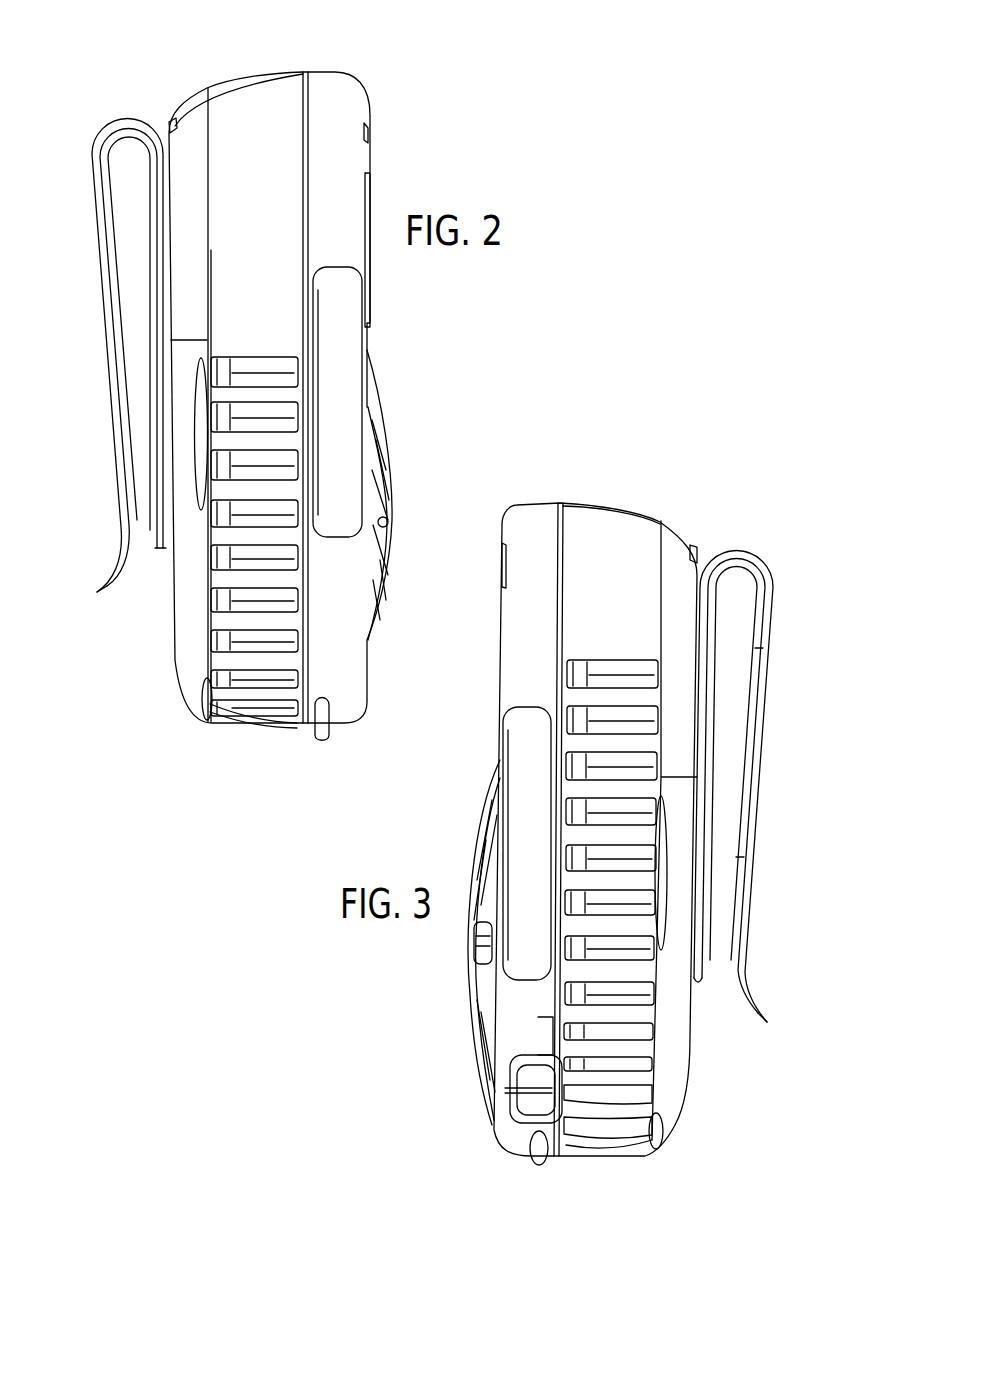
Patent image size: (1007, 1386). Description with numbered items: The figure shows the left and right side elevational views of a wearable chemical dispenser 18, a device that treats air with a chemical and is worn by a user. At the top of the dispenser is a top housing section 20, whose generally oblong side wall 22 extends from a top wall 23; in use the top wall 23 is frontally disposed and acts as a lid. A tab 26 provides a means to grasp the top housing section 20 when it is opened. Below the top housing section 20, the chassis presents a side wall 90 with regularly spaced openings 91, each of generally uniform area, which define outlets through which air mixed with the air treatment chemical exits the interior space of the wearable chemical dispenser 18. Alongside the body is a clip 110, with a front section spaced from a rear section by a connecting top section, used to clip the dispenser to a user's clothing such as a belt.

In FIG. 2, the wearable chemical dispenser 18 is at (147, 736).
In FIG. 3, the wearable chemical dispenser 18 is at (721, 1128).
In FIG. 2, the top housing section 20 is at (357, 120).
In FIG. 3, the top housing section 20 is at (528, 496).
In FIG. 2, the side wall 22 is at (352, 196).
In FIG. 3, the side wall 22 is at (546, 626).
In FIG. 2, the top wall 23 is at (367, 160).
In FIG. 3, the top wall 23 is at (500, 592).
In FIG. 3, the tab 26 is at (541, 1162).
In FIG. 2, the side wall 90 is at (228, 95).
In FIG. 3, the side wall 90 is at (603, 525).
In FIG. 2, the openings 91 is at (228, 552).
In FIG. 3, the openings 91 is at (640, 1032).
In FIG. 2, the clip 110 is at (101, 133).
In FIG. 3, the clip 110 is at (770, 618).